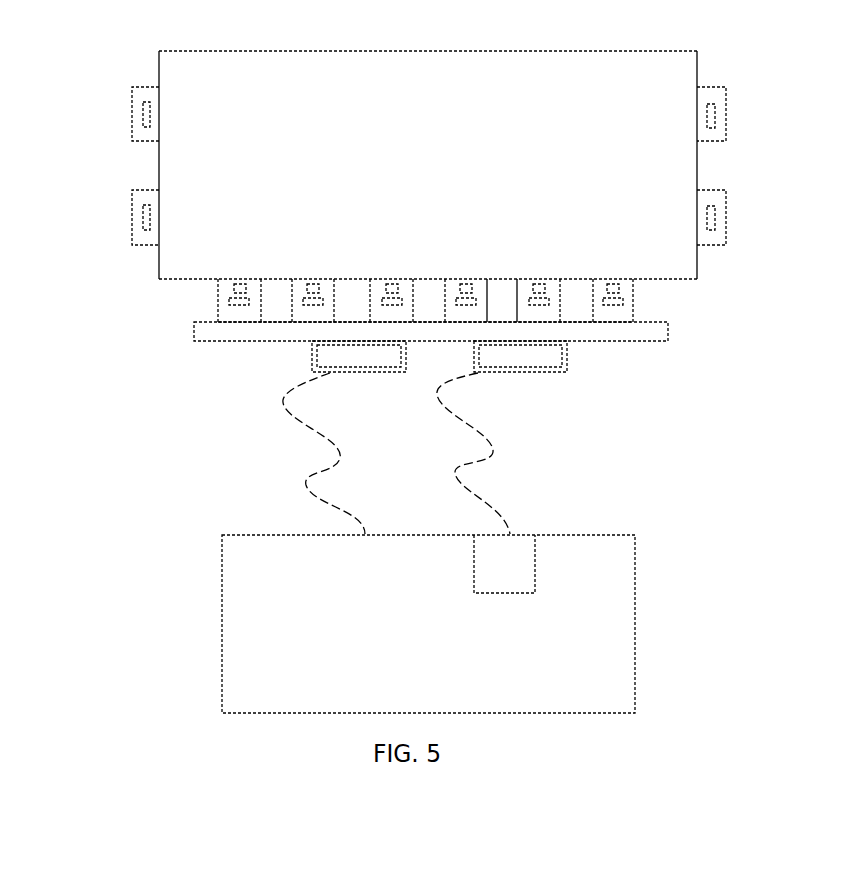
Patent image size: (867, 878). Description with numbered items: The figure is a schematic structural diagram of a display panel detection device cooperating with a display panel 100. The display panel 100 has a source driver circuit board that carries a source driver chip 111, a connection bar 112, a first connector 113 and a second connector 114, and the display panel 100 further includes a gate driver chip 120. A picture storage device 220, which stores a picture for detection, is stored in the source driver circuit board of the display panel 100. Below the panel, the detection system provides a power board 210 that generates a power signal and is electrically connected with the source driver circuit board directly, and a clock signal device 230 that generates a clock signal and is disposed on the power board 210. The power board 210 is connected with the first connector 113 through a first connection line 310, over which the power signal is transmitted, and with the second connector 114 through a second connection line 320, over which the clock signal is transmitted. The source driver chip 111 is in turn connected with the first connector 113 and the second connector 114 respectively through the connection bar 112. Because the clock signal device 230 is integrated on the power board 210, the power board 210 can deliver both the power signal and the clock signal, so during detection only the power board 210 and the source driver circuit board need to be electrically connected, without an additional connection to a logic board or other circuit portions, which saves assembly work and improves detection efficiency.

The display panel 100 is at (156, 162).
The gate driver chip 120 is at (147, 85).
The source driver chip 111 is at (215, 300).
The connection bar 112 is at (196, 334).
The first connector 113 is at (311, 357).
The second connector 114 is at (568, 358).
The picture storage device 220 is at (621, 289).
The first connection line 310 is at (305, 478).
The second connection line 320 is at (491, 442).
The power board 210 is at (220, 620).
The clock signal device 230 is at (527, 528).